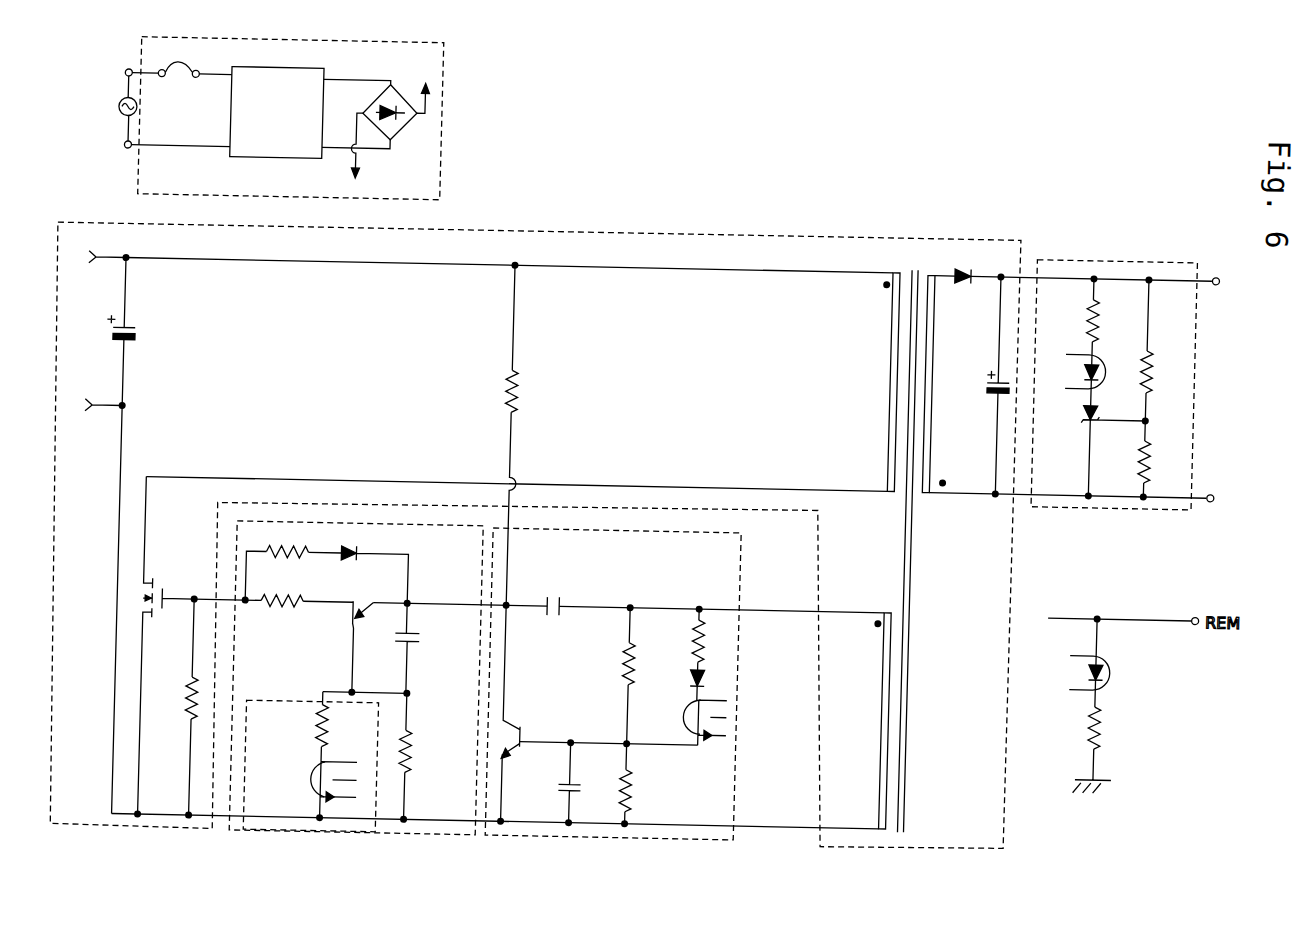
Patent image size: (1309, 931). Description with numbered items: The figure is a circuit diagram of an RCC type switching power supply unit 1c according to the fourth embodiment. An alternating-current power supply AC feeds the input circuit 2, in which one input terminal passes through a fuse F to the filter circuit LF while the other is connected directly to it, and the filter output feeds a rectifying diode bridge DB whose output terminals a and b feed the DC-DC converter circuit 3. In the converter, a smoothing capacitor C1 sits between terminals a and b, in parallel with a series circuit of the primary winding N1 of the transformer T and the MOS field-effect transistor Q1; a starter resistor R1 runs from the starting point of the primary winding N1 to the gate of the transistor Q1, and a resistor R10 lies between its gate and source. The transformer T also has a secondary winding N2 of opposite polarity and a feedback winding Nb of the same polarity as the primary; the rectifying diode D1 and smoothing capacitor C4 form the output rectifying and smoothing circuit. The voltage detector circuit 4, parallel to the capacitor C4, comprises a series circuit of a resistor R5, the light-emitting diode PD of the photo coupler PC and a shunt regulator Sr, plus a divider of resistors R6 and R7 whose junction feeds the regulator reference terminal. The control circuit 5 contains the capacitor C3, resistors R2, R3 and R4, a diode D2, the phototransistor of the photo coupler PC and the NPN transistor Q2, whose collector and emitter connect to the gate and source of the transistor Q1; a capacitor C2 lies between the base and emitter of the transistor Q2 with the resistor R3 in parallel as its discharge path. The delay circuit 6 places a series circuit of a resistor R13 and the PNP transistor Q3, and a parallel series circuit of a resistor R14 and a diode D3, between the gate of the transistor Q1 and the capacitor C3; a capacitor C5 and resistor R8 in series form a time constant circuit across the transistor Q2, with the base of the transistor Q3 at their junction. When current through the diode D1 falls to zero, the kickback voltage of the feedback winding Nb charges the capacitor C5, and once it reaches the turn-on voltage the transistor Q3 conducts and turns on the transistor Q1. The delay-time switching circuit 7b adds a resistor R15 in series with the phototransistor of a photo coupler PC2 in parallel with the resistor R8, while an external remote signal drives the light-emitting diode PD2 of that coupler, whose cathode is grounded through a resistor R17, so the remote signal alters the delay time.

The switching power supply unit 1c is at (1073, 74).
The input circuit 2 is at (286, 119).
The DC-DC converter circuit 3 is at (767, 237).
The voltage detector circuit 4 is at (1115, 241).
The control circuit 5 is at (573, 831).
The delay circuit 6 is at (415, 829).
The delay-time switching circuit 7b is at (318, 831).
The alternating-current power supply AC is at (115, 108).
The fuse F is at (179, 58).
The filter circuit LF is at (277, 113).
The rectifying diode bridge DB is at (390, 100).
The smoothing capacitor C1 is at (103, 535).
The MOS field-effect transistor Q1 is at (168, 646).
The resistor R10 is at (176, 707).
The starter resistor R1 is at (521, 436).
The resistor R13 is at (281, 611).
The resistor R14 is at (293, 573).
The diode D3 is at (374, 568).
The PNP transistor Q3 is at (346, 637).
The capacitor C5 is at (423, 648).
The resistor R8 is at (419, 758).
The resistor R15 is at (306, 726).
The photo coupler PC2 is at (317, 791).
The capacitor C3 is at (551, 620).
The resistor R2 is at (615, 676).
The resistor R4 is at (688, 637).
The diode D2 is at (685, 685).
The photo coupler PC is at (692, 737).
The NPN transistor Q2 is at (519, 715).
The capacitor C2 is at (558, 784).
The resistor R3 is at (638, 786).
The transformer T is at (911, 542).
The primary winding N1 is at (879, 381).
The secondary winding N2 is at (944, 385).
The feedback winding Nb is at (900, 703).
The rectifying diode D1 is at (963, 265).
The smoothing capacitor C4 is at (986, 385).
The resistor R5 is at (1107, 315).
The light-emitting diode PD is at (1076, 374).
The shunt regulator Sr is at (1105, 451).
The resistor R6 is at (1158, 348).
The resistor R7 is at (1130, 460).
The light-emitting diode PD2 is at (1092, 663).
The resistor R17 is at (1102, 750).